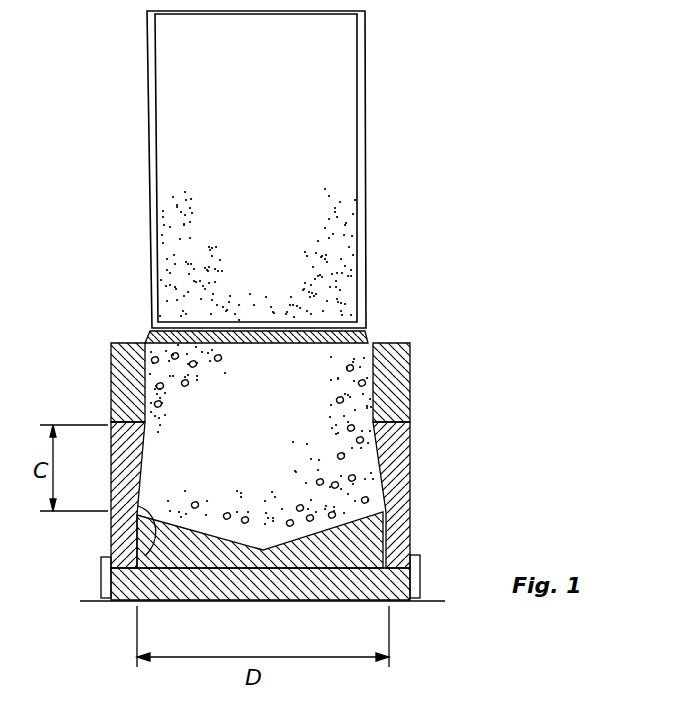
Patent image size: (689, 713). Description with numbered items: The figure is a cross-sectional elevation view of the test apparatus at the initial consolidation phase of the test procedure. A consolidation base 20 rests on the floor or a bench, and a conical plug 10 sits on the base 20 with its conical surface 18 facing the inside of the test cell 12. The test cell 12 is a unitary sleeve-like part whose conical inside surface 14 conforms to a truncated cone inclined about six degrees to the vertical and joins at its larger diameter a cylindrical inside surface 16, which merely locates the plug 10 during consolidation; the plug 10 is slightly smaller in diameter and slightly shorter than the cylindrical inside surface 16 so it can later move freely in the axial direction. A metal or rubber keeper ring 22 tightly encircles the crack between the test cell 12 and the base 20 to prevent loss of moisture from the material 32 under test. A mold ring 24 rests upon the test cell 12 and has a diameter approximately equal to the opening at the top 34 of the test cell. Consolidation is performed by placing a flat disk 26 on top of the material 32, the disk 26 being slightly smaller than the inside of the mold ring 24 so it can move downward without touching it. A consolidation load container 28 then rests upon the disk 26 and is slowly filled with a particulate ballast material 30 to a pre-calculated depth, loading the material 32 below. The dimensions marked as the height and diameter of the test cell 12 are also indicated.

The conical plug 10 is at (160, 545).
The test cell 12 is at (412, 493).
The conical inside surface 14 is at (141, 488).
The cylindrical inside surface 16 is at (138, 496).
The conical surface 18 is at (222, 535).
The consolidation base 20 is at (365, 600).
The keeper ring 22 is at (102, 578).
The mold ring 24 is at (410, 388).
The flat disk 26 is at (148, 333).
The consolidation load container 28 is at (152, 186).
The particulate ballast material 30 is at (261, 257).
The material under test 32 is at (261, 458).
The top of the test cell 34 is at (125, 420).